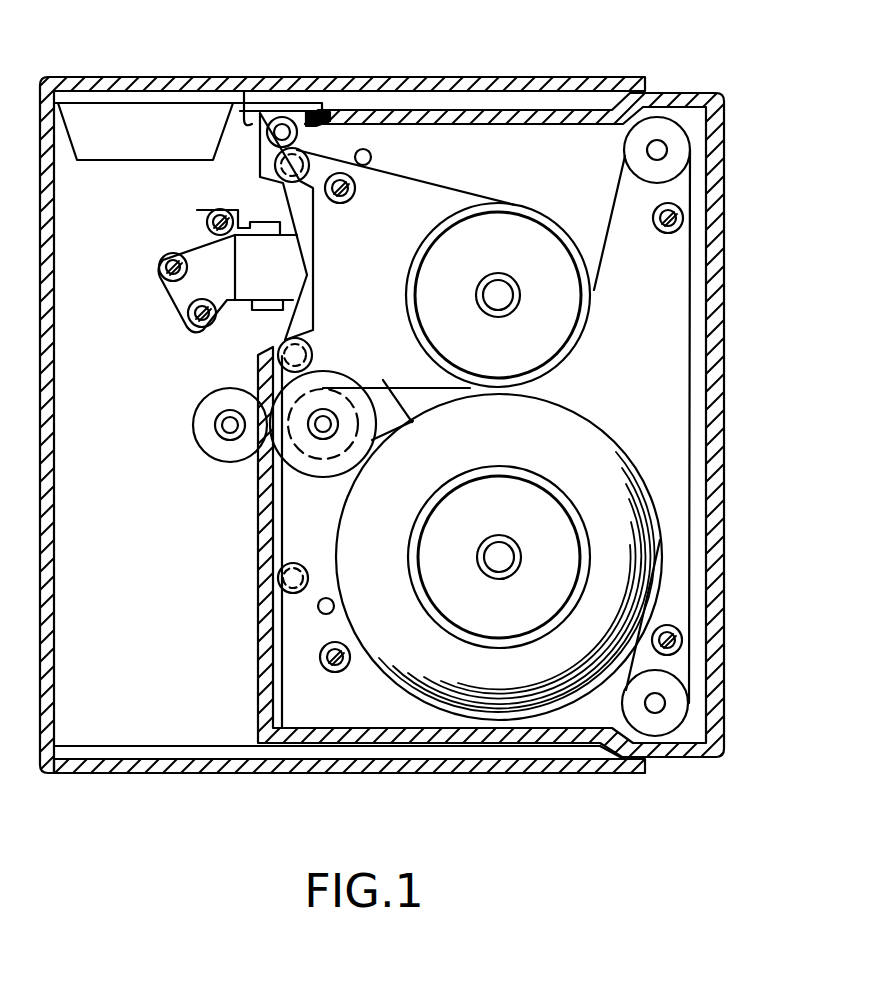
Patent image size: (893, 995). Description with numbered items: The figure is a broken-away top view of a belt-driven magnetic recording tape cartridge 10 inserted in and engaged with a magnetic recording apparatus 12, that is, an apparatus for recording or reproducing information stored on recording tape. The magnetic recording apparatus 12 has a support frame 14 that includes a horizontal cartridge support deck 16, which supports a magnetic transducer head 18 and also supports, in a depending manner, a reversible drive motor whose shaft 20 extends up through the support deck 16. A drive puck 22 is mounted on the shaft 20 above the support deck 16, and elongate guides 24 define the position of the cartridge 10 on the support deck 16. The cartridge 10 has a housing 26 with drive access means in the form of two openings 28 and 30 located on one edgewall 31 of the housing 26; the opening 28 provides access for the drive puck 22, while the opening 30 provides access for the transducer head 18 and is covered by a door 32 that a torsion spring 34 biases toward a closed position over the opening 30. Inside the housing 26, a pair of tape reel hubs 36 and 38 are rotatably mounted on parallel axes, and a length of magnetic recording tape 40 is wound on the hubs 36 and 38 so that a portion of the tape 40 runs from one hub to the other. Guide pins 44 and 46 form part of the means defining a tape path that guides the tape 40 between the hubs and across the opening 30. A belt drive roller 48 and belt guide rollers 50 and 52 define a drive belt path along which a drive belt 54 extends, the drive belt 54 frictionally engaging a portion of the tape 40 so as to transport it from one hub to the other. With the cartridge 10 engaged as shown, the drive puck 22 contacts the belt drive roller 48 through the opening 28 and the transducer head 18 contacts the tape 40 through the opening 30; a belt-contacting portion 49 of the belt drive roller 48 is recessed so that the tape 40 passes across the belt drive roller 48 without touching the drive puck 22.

The belt-driven magnetic recording tape cartridge 10 is at (729, 70).
The magnetic recording apparatus 12 is at (163, 68).
The support frame 14 is at (178, 774).
The cartridge support deck 16 is at (136, 592).
The magnetic transducer head 18 is at (257, 290).
The shaft 20 is at (228, 434).
The drive puck 22 is at (210, 415).
The elongate guides 24 is at (290, 80).
The housing 26 is at (724, 362).
The opening 28 is at (262, 463).
The opening 30 is at (262, 180).
The edgewall 31 is at (257, 683).
The door 32 is at (103, 162).
The torsion spring 34 is at (246, 92).
The tape reel hub 36 is at (655, 510).
The tape reel hub 38 is at (540, 330).
The magnetic recording tape 40 is at (430, 178).
The guide pin 44 is at (308, 357).
The guide pin 46 is at (317, 193).
The belt drive roller 48 is at (364, 366).
The belt-contacting portion 49 is at (362, 422).
The belt guide roller 50 is at (663, 125).
The belt guide roller 52 is at (683, 708).
The drive belt 54 is at (598, 280).